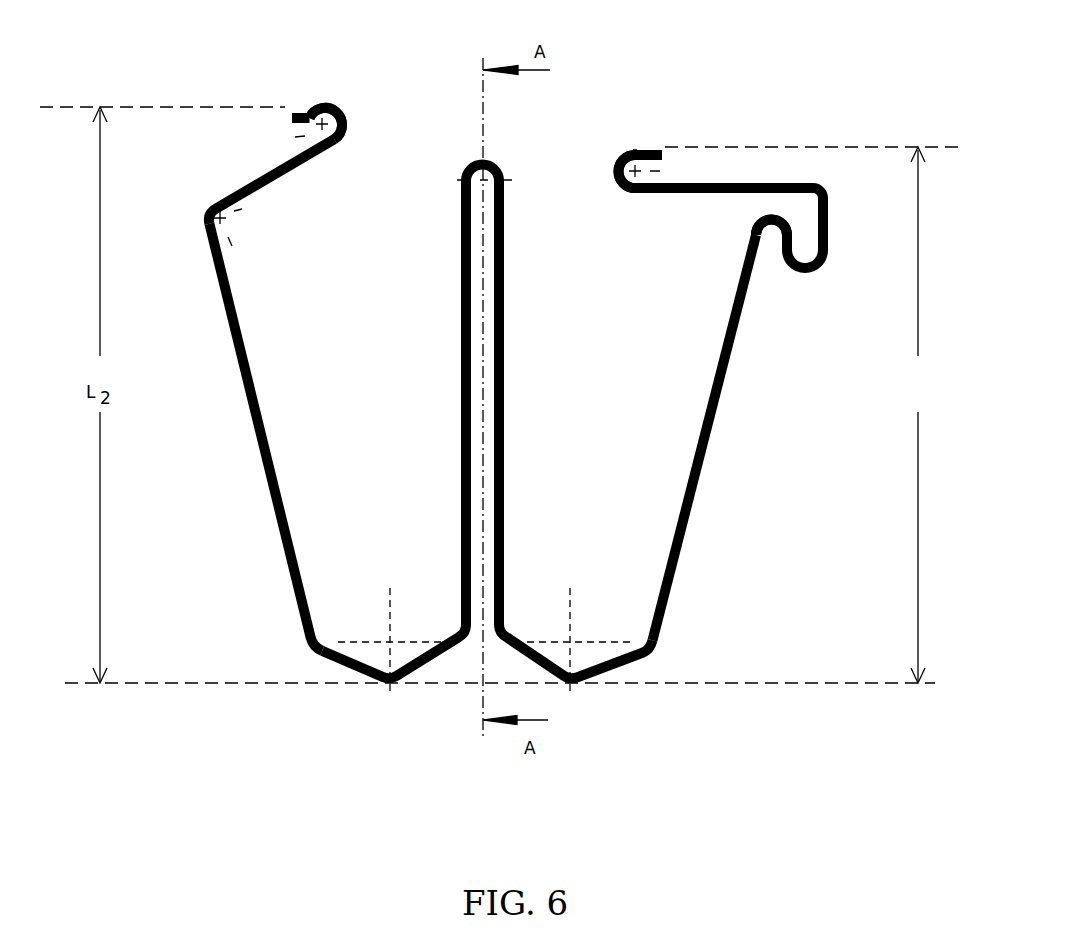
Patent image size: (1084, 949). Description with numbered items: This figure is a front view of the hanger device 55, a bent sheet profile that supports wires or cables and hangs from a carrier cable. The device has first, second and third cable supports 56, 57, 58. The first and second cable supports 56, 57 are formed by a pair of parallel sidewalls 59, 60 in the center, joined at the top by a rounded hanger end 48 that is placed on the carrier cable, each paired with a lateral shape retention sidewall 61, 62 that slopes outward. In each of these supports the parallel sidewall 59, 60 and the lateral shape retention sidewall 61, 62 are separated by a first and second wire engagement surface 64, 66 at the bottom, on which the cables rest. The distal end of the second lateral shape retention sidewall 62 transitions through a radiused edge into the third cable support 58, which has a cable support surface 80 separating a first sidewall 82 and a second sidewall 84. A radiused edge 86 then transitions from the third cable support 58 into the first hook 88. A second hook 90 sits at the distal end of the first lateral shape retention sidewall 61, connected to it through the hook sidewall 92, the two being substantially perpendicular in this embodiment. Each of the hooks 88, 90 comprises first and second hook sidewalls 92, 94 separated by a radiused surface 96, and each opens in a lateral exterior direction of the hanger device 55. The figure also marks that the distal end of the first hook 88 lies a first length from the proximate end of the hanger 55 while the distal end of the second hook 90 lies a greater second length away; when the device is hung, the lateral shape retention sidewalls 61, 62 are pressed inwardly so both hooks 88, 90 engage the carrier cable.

The arch top of central divider 48 is at (488, 162).
The hanger device 55 is at (836, 83).
The first cable support 56 is at (354, 704).
The second cable support 57 is at (577, 709).
The third cable support 58 is at (812, 289).
The parallel sidewall 59 is at (460, 395).
The parallel sidewall 60 is at (505, 392).
The first lateral shape retention sidewall 61 is at (247, 357).
The second lateral shape retention sidewall 62 is at (691, 509).
The first wire engagement surface 64 is at (408, 654).
The second wire engagement surface 66 is at (596, 655).
The cable support surface 80 is at (792, 273).
The first sidewall 82 is at (803, 232).
The second sidewall 84 is at (829, 236).
The radiused edge 86 is at (830, 195).
The first hook 88 is at (684, 146).
The second hook 90 is at (360, 90).
The first hook sidewall 92 is at (290, 152).
The second hook sidewall 94 is at (296, 105).
The radiused surface 96 is at (336, 102).